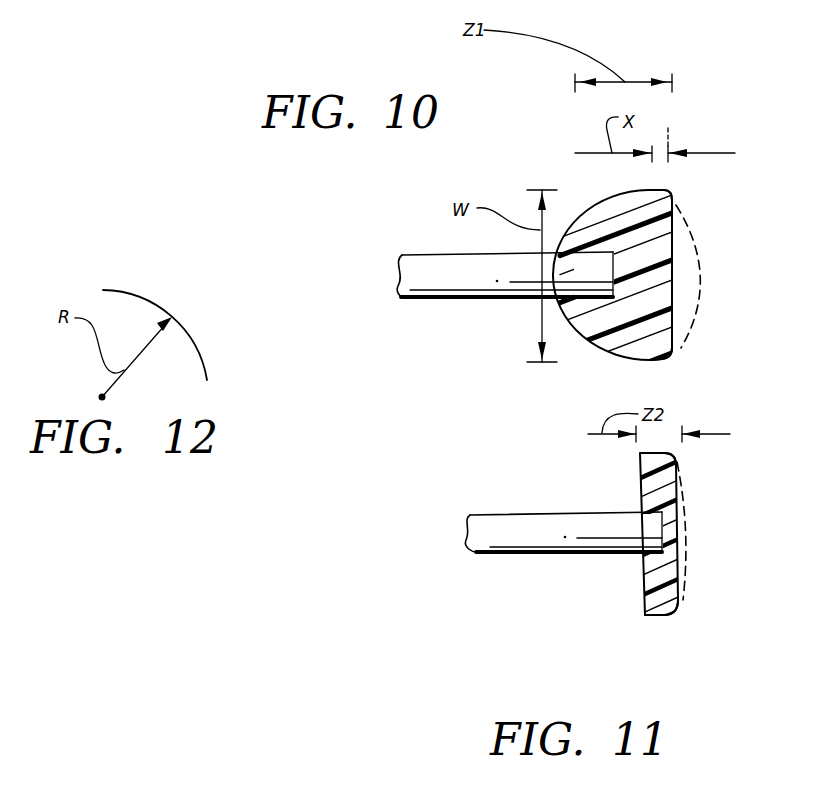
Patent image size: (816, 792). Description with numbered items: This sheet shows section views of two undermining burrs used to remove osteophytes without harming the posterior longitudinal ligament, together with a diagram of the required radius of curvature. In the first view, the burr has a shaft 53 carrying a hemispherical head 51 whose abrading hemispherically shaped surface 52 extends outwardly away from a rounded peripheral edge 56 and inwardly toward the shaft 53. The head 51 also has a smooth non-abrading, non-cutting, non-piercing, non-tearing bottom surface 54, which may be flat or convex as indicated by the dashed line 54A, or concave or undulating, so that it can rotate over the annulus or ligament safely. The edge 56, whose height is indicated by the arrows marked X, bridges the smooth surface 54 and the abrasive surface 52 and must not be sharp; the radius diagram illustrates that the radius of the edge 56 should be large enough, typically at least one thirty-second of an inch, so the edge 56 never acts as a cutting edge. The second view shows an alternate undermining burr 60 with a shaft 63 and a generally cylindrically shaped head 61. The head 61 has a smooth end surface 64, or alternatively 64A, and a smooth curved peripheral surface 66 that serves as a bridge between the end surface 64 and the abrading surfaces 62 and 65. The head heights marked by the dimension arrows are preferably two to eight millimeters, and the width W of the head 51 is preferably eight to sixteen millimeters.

In FIG. 10, the hemispherical head 51 is at (706, 306).
In FIG. 10, the abrading hemispherically shaped surface 52 is at (633, 358).
In FIG. 10, the shaft 53 is at (490, 299).
In FIG. 10, the smooth bottom surface 54 is at (683, 232).
In FIG. 10, the convex bottom surface 54A is at (706, 250).
In FIG. 10, the rounded peripheral edge 56 is at (678, 366).
In FIG. 12, the rounded peripheral edge 56 is at (154, 306).
In FIG. 11, the undermining burr 60 is at (440, 557).
In FIG. 11, the generally cylindrically shaped head 61 is at (565, 542).
In FIG. 11, the abrading surface 62 is at (640, 572).
In FIG. 11, the shaft 63 is at (468, 518).
In FIG. 11, the smooth end surface 64 is at (680, 476).
In FIG. 11, the smooth end surface 64A is at (689, 535).
In FIG. 11, the abrading surface 65 is at (654, 615).
In FIG. 11, the smooth curved peripheral surface 66 is at (677, 615).